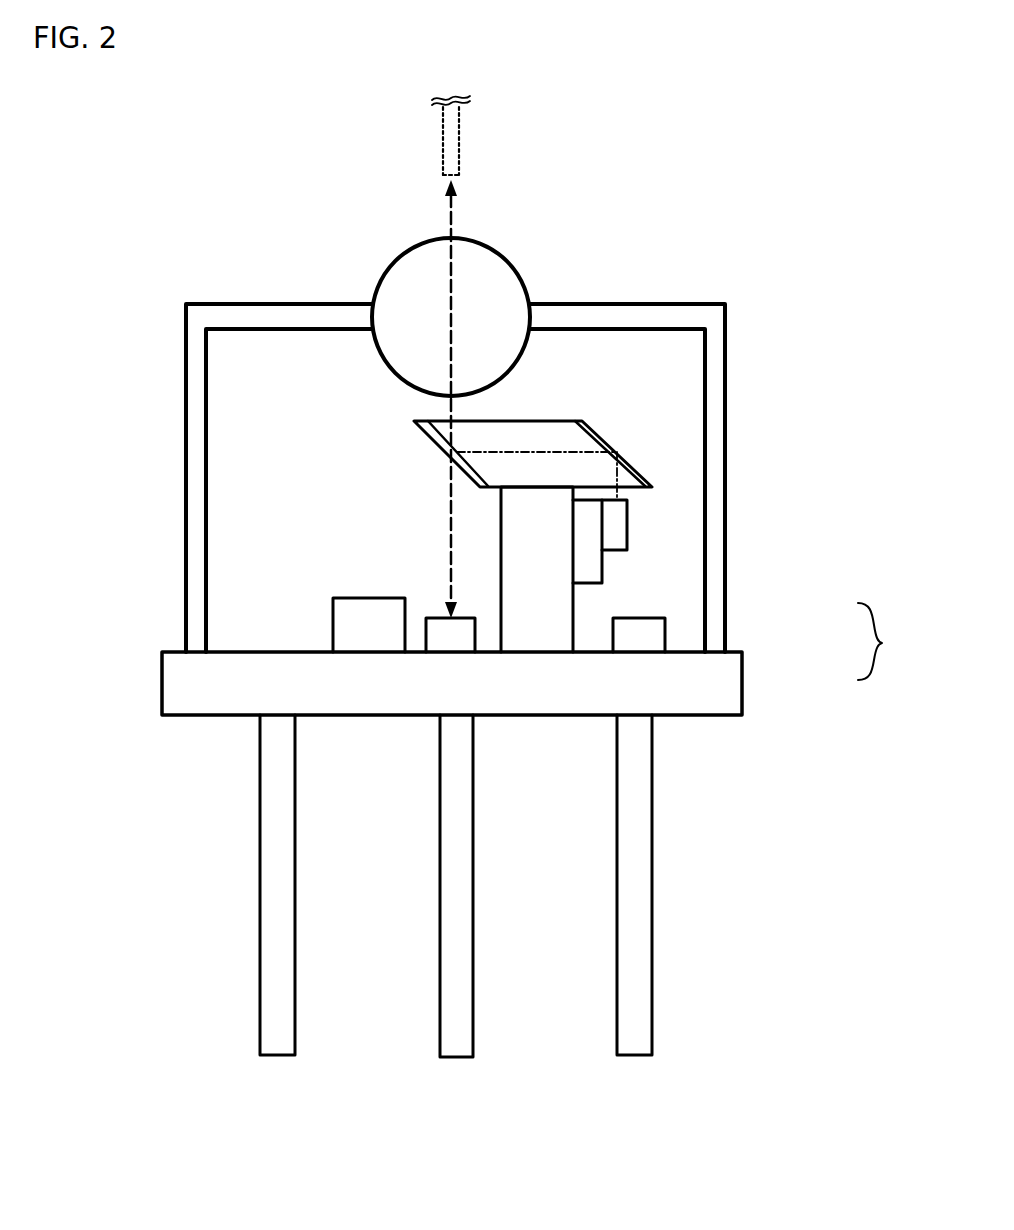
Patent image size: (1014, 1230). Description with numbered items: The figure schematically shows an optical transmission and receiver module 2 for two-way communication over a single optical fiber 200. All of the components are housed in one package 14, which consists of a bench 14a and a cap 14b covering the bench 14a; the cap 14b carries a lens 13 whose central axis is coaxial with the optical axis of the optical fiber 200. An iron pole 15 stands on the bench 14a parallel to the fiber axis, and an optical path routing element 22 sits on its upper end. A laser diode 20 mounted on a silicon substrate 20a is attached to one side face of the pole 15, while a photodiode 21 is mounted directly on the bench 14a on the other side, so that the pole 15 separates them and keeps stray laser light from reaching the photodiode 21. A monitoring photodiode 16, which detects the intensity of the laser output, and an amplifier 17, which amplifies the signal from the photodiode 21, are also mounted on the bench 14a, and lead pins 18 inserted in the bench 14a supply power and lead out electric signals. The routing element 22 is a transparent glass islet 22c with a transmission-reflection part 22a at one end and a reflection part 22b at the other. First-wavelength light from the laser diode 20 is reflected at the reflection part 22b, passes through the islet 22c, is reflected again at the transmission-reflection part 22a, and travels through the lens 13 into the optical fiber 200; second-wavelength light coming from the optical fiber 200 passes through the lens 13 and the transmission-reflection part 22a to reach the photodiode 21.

The optical transmission and receiver module 2 is at (743, 352).
The lens 13 is at (513, 265).
The package 14 is at (889, 641).
The bench 14a is at (728, 698).
The cap 14b is at (717, 630).
The pole 15 is at (538, 643).
The monitoring photodiode 16 is at (650, 645).
The amplifier 17 is at (378, 642).
The lead pins 18 is at (283, 1042).
The laser diode 20 is at (618, 538).
The substrate 20a is at (588, 523).
The photodiode 21 is at (443, 645).
The optical path routing element 22 is at (640, 418).
The transmission-reflection part 22a is at (435, 438).
The reflection part 22b is at (643, 477).
The islet 22c is at (557, 428).
The optical fiber 200 is at (459, 145).